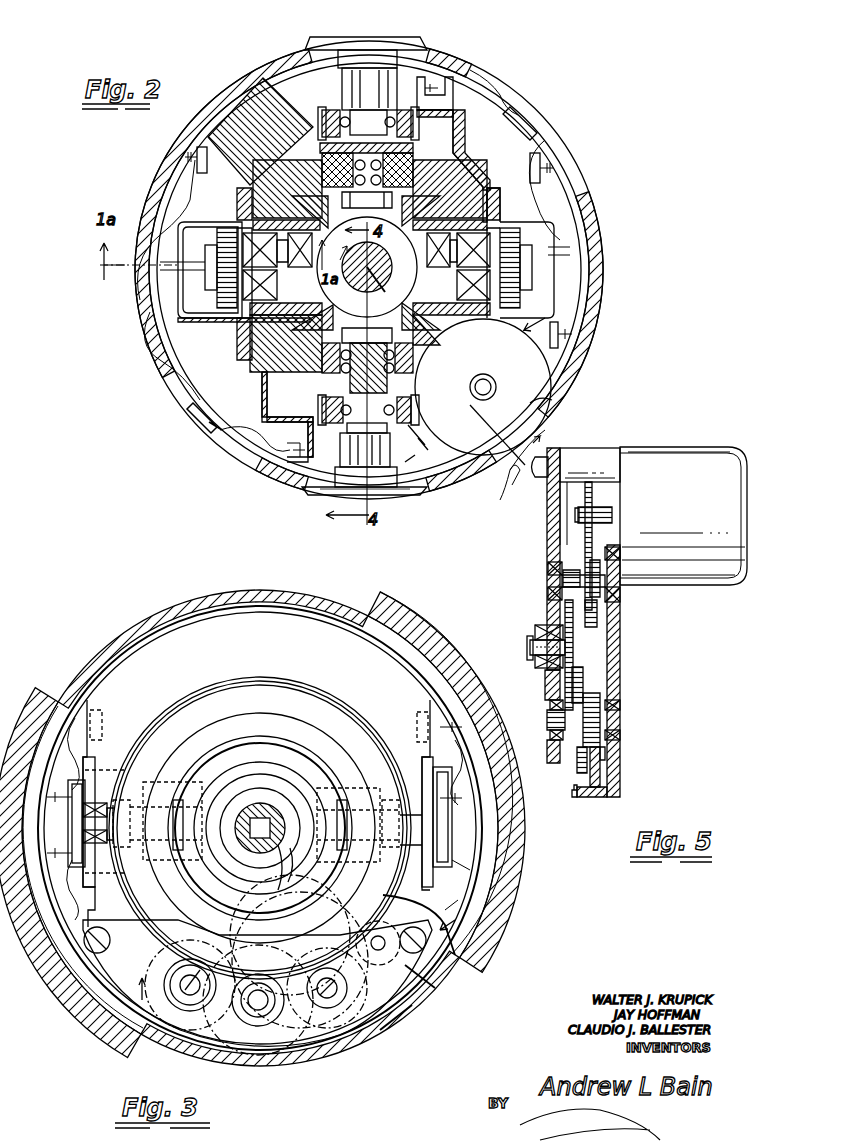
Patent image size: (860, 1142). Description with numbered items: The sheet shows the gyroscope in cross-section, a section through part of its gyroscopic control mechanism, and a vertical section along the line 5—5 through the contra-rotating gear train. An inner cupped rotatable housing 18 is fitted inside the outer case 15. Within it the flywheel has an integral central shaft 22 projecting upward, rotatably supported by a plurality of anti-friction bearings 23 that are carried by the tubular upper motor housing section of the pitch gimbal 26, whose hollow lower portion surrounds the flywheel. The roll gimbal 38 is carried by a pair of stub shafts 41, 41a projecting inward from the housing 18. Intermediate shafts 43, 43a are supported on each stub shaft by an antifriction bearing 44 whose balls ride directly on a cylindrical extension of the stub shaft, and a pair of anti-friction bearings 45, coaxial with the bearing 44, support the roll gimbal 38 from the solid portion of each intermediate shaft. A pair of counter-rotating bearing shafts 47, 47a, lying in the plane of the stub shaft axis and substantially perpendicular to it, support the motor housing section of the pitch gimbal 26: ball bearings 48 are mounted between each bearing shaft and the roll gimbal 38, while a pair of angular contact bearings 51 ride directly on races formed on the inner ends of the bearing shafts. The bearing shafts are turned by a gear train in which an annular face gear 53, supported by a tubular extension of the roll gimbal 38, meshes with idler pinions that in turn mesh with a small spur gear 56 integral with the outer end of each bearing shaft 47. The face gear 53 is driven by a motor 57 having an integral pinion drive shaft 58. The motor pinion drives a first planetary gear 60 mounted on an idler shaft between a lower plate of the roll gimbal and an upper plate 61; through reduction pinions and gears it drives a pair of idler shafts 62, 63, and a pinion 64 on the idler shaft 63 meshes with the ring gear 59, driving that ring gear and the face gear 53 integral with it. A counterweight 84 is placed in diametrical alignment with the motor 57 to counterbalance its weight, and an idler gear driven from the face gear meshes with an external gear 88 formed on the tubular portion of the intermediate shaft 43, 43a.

In FIG. 2, the section line 5 is at (469, 387).
In FIG. 3, the section line 5 is at (298, 950).
In FIG. 3, the rim 15 is at (492, 926).
In FIG. 2, the inner cupped rotatable housing 18 is at (455, 57).
In FIG. 3, the inner cupped rotatable housing 18 is at (210, 600).
In FIG. 2, the central shaft 22 is at (450, 195).
In FIG. 3, the central shaft 22 is at (262, 826).
In FIG. 3, the anti-friction bearings 23 is at (280, 882).
In FIG. 2, the pitch gimbal 26 is at (287, 195).
In FIG. 3, the pitch gimbal 26 is at (312, 780).
In FIG. 2, the roll gimbal 38 is at (292, 348).
In FIG. 5, the roll gimbal 38 is at (609, 797).
In FIG. 3, the roll gimbal 38 is at (215, 740).
In FIG. 2, the stub shaft 41 is at (345, 452).
In FIG. 2, the stub shaft 41a is at (386, 50).
In FIG. 2, the intermediate shaft 43 is at (380, 280).
In FIG. 2, the intermediate shaft 43a is at (328, 112).
In FIG. 2, the antifriction bearing 44 is at (418, 441).
In FIG. 2, the anti-friction bearings 45 is at (412, 368).
In FIG. 2, the counter-rotating bearing shaft 47 is at (270, 273).
In FIG. 2, the gear 47a is at (483, 271).
In FIG. 2, the ball bearings 48 is at (236, 322).
In FIG. 2, the angular contact bearings 51 is at (367, 229).
In FIG. 5, the annular face gear 53 is at (602, 757).
In FIG. 2, the small spur gear 56 is at (228, 222).
In FIG. 2, the motor 57 is at (574, 394).
In FIG. 5, the motor 57 is at (688, 470).
In FIG. 3, the motor 57 is at (405, 1013).
In FIG. 5, the pinion drive shaft 58 is at (580, 510).
In FIG. 3, the pinion drive shaft 58 is at (382, 915).
In FIG. 5, the ring gear 59 is at (620, 746).
In FIG. 3, the ring gear 59 is at (300, 702).
In FIG. 5, the first planetary gear 60 is at (585, 545).
In FIG. 3, the first planetary gear 60 is at (397, 1024).
In FIG. 5, the upper plate 61 is at (546, 685).
In FIG. 3, the upper plate 61 is at (419, 951).
In FIG. 5, the idler shaft 62 is at (533, 650).
In FIG. 3, the idler shaft 62 is at (258, 1003).
In FIG. 5, the idler shaft 63 is at (548, 716).
In FIG. 3, the idler shaft 63 is at (180, 988).
In FIG. 5, the pinion 64 is at (605, 718).
In FIG. 3, the pinion 64 is at (258, 1000).
In FIG. 2, the counterweight 84 is at (268, 133).
In FIG. 2, the external gear 88 is at (483, 392).